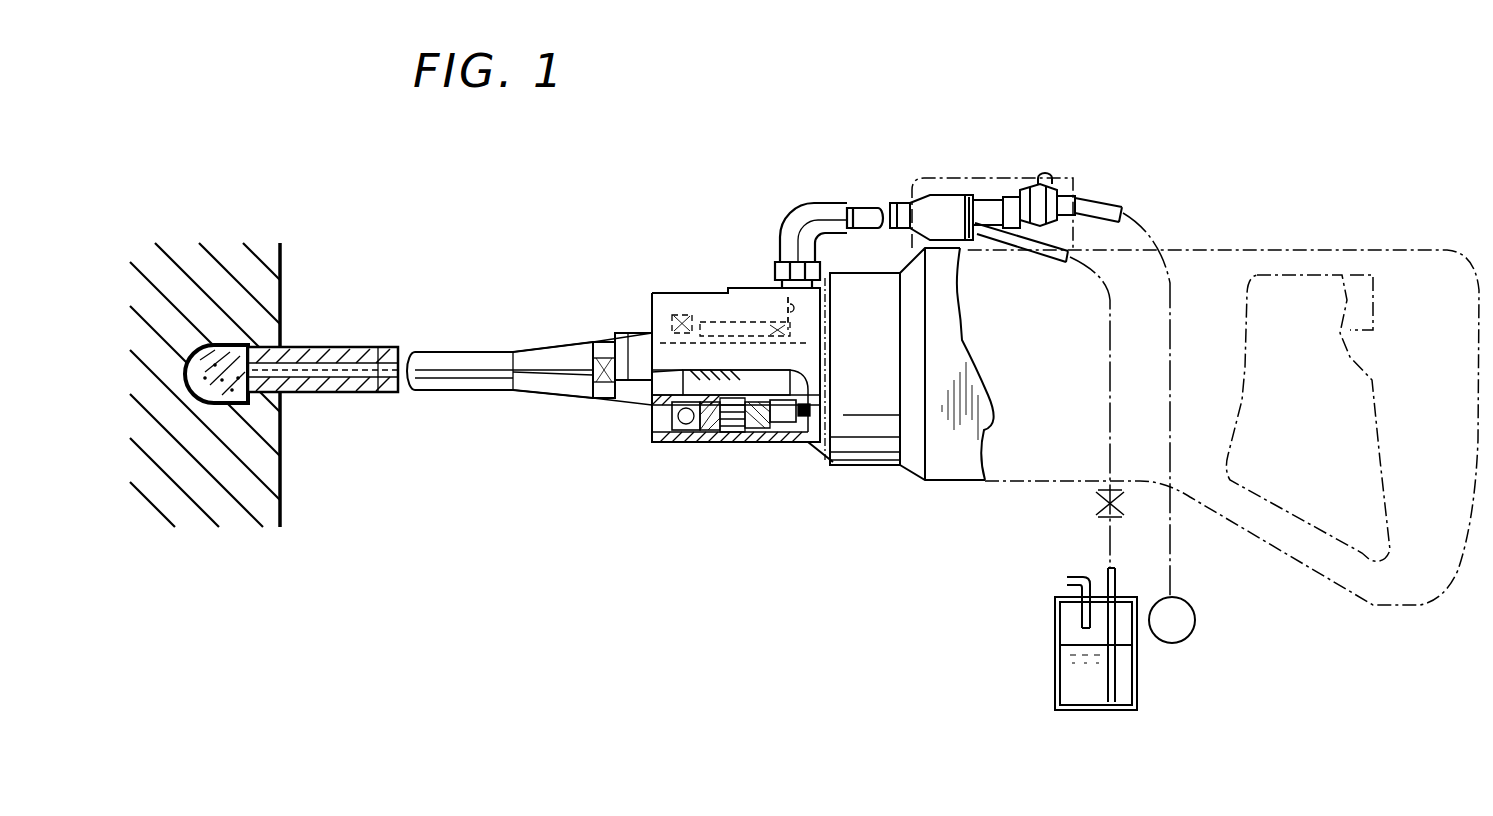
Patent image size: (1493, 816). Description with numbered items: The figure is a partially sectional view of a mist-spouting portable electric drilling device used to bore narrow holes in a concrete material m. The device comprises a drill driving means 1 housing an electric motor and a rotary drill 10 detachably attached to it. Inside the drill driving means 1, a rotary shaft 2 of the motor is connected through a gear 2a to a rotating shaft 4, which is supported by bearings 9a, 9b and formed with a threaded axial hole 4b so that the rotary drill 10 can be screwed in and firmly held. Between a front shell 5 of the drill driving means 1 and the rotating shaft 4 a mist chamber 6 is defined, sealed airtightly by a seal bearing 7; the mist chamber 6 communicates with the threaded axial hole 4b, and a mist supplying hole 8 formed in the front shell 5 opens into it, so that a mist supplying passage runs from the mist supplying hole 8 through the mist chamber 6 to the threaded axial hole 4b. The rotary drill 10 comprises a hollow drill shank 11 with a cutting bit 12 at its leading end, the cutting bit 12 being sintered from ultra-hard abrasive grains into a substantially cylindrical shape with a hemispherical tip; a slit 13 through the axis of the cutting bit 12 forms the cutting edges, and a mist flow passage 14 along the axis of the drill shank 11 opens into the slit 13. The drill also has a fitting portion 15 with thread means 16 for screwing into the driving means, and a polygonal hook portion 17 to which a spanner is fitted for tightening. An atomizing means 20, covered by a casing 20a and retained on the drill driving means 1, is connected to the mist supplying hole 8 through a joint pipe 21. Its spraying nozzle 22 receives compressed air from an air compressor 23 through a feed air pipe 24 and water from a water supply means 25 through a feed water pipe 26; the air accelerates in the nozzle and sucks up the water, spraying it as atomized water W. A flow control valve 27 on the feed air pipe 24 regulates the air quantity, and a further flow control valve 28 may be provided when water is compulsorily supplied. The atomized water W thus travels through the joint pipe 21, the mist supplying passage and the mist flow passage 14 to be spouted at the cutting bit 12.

The drill driving means 1 is at (944, 490).
The rotary shaft 2 is at (752, 445).
The gear 2a is at (732, 442).
The rotating shaft 4 is at (643, 408).
The threaded axial hole 4b is at (745, 375).
The front shell 5 is at (653, 443).
The mist chamber 6 is at (802, 443).
The seal bearing 7 is at (692, 445).
The mist supplying hole 8 is at (787, 297).
The bearing 9a is at (673, 441).
The bearing 9b is at (772, 442).
The rotary drill 10 is at (452, 398).
The drill shank 11 is at (440, 353).
The cutting bit 12 is at (233, 346).
The slit 13 is at (188, 394).
The mist flow passage 14 is at (357, 393).
The fitting portion 15 is at (652, 372).
The thread means 16 is at (690, 382).
The polygonal hook portion 17 is at (596, 362).
The atomizing means 20 is at (968, 164).
The casing 20a is at (909, 190).
The joint pipe 21 is at (803, 217).
The spraying nozzle 22 is at (945, 197).
The air compressor 23 is at (1192, 632).
The feed air pipe 24 is at (1122, 210).
The water supply means 25 is at (1055, 660).
The feed water pipe 26 is at (1067, 258).
The flow control valve 27 is at (1046, 170).
The flow control valve 28 is at (1092, 505).
The atomized water W is at (330, 393).
The concrete material m is at (232, 489).